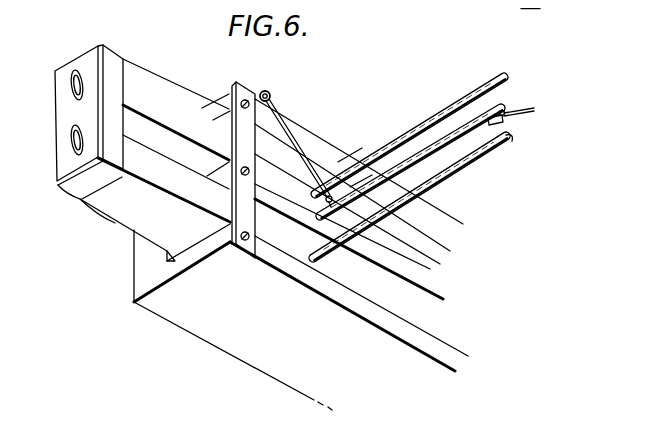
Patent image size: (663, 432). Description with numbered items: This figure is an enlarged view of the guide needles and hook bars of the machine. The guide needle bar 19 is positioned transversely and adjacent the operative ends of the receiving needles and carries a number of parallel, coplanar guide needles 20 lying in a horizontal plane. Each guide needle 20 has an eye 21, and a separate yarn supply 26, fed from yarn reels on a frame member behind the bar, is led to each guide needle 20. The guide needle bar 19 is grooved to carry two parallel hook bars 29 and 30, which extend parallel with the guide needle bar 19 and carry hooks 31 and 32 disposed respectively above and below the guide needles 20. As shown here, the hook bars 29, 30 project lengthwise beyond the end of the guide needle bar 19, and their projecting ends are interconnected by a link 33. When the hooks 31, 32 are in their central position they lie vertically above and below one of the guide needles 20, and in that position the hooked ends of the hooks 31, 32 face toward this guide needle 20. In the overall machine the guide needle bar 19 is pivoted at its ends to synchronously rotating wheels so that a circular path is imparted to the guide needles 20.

The guide needle bar 19 is at (150, 296).
The guide needle 20 is at (447, 126).
The eye 21 is at (495, 111).
The yarn supply 26 is at (305, 161).
The hook bar 29 is at (267, 151).
The hook bar 30 is at (120, 191).
The hook 31 is at (389, 128).
The hook 32 is at (500, 136).
The link 33 is at (102, 76).